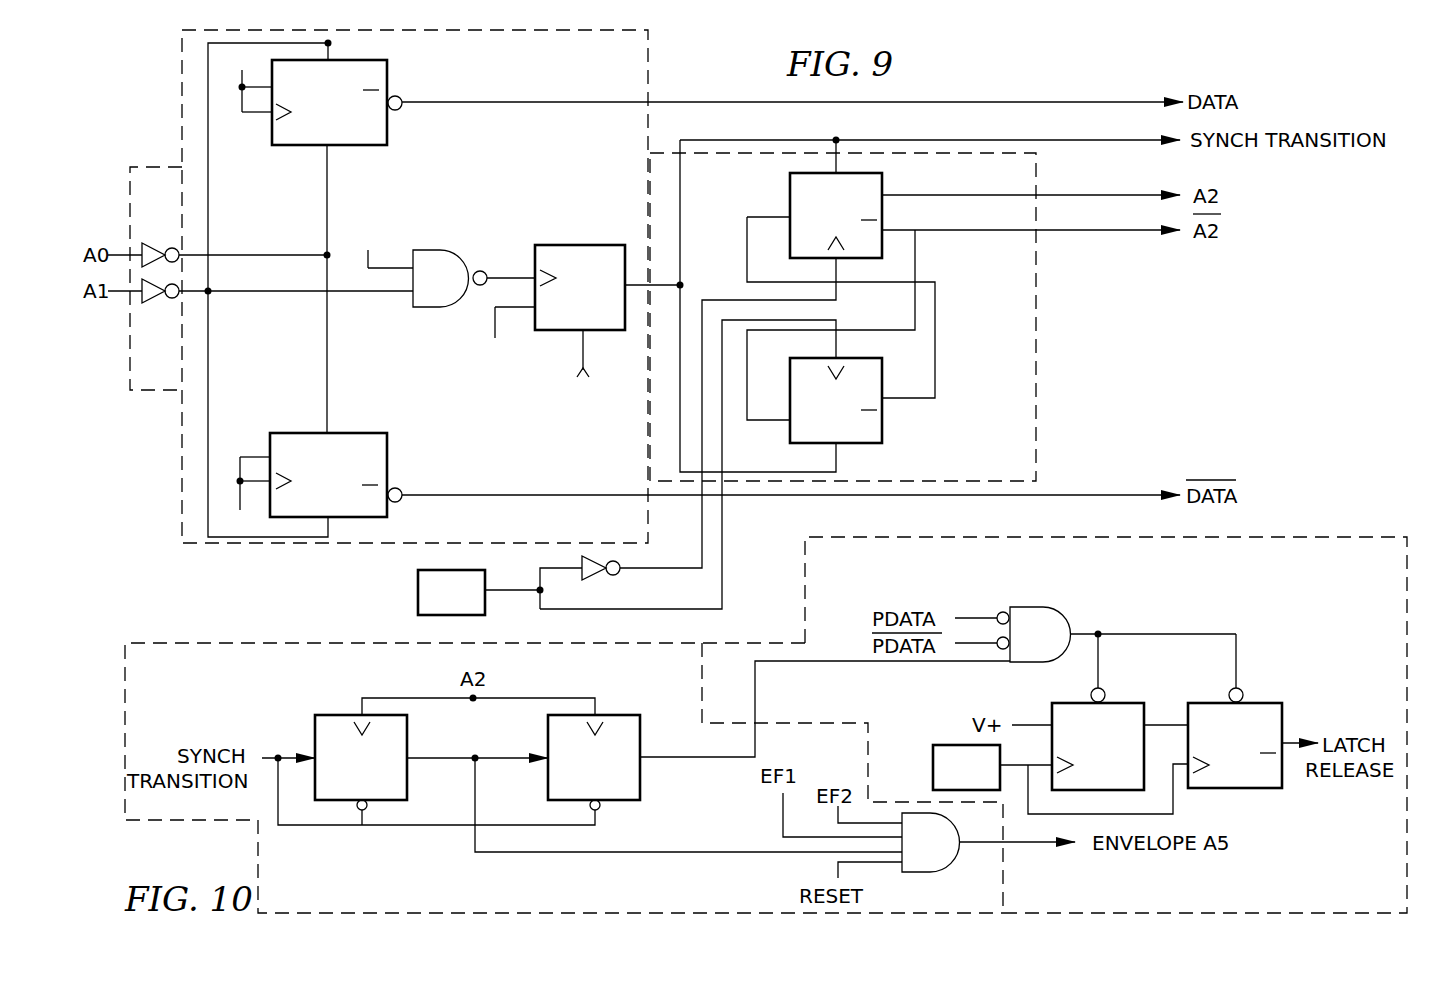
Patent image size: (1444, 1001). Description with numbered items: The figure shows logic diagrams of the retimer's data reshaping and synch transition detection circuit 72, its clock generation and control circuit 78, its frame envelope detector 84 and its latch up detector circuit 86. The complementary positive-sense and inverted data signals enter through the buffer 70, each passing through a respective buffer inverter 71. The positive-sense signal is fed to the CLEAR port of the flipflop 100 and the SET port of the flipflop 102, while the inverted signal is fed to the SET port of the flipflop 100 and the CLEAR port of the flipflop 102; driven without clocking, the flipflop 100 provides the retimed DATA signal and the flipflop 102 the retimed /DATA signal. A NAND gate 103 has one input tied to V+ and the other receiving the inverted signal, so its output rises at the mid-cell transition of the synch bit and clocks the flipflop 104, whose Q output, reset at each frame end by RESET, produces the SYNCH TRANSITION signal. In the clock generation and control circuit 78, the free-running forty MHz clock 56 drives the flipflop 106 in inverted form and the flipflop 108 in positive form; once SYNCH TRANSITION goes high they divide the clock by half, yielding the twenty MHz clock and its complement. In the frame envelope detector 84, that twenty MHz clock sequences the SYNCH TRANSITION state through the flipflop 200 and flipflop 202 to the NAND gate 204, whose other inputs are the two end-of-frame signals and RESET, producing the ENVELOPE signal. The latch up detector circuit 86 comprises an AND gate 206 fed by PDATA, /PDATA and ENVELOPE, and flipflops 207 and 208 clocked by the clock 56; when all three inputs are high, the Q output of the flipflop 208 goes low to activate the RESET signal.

In FIG. 9, the clock 56 is at (418, 593).
In FIG. 10, the clock 56 is at (953, 745).
In FIG. 9, the buffer 70 is at (149, 167).
In FIG. 9, the buffer inverter 71 is at (150, 244).
In FIG. 9, the data reshaping and synch transition detection circuit 72 is at (650, 44).
In FIG. 9, the clock generation and control circuit 78 is at (1037, 296).
In FIG. 10, the frame envelope detector 84 is at (183, 642).
In FIG. 10, the latch up detector circuit 86 is at (1285, 537).
In FIG. 9, the flipflop 100 is at (388, 137).
In FIG. 9, the flipflop 102 is at (388, 441).
In FIG. 9, the NAND gate 103 is at (446, 250).
In FIG. 9, the flipflop 104 is at (566, 245).
In FIG. 9, the flipflop 106 is at (788, 188).
In FIG. 9, the flipflop 108 is at (883, 423).
In FIG. 10, the flipflop 200 is at (336, 715).
In FIG. 10, the flipflop 202 is at (641, 776).
In FIG. 10, the NAND gate 204 is at (925, 872).
In FIG. 10, the AND gate 206 is at (1040, 607).
In FIG. 10, the flipflop 207 is at (1120, 703).
In FIG. 10, the flipflop 208 is at (1262, 703).